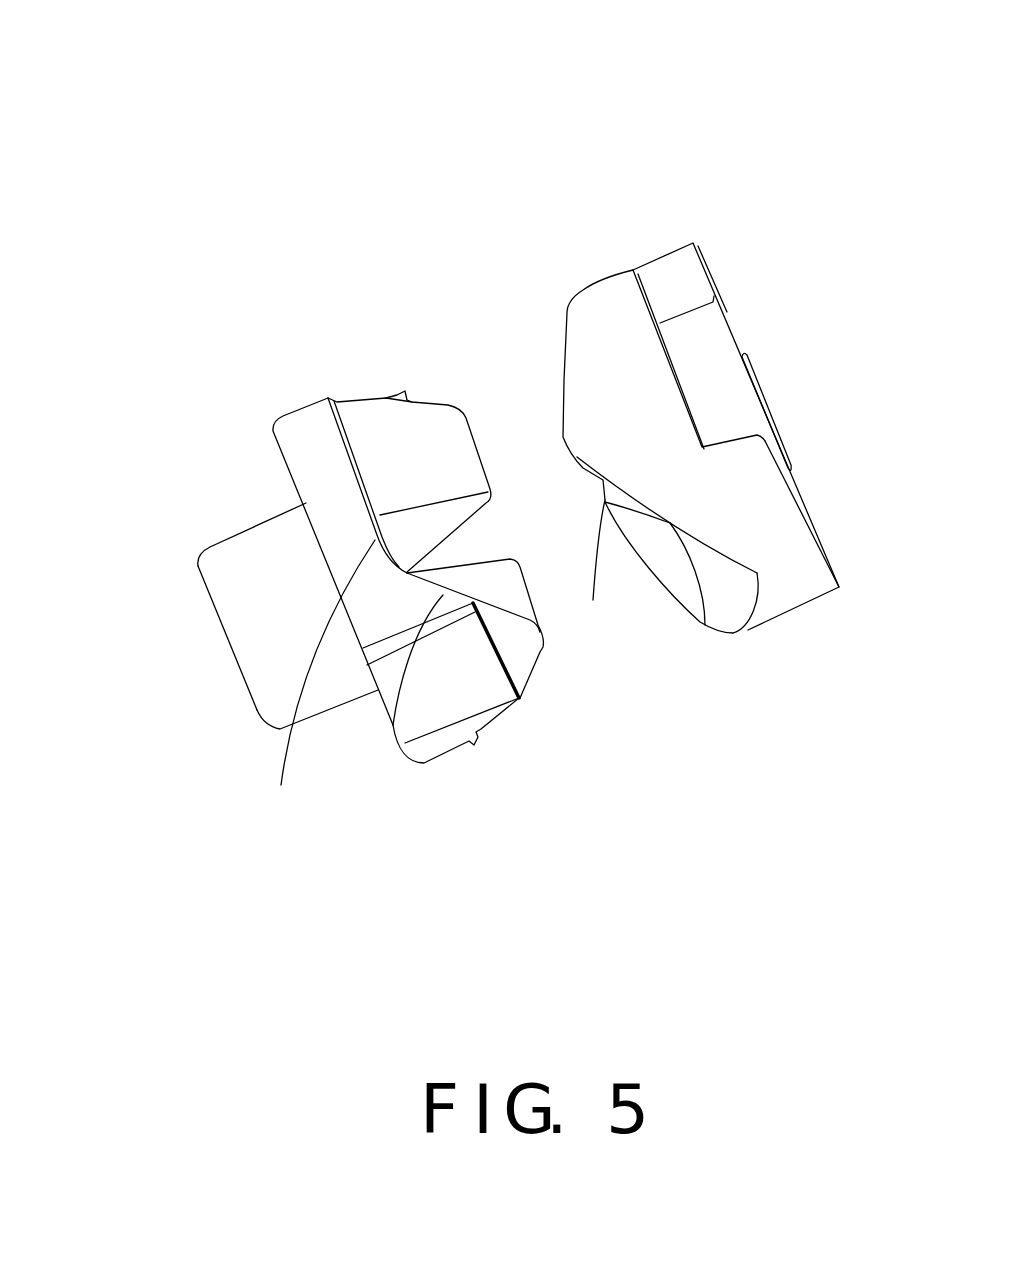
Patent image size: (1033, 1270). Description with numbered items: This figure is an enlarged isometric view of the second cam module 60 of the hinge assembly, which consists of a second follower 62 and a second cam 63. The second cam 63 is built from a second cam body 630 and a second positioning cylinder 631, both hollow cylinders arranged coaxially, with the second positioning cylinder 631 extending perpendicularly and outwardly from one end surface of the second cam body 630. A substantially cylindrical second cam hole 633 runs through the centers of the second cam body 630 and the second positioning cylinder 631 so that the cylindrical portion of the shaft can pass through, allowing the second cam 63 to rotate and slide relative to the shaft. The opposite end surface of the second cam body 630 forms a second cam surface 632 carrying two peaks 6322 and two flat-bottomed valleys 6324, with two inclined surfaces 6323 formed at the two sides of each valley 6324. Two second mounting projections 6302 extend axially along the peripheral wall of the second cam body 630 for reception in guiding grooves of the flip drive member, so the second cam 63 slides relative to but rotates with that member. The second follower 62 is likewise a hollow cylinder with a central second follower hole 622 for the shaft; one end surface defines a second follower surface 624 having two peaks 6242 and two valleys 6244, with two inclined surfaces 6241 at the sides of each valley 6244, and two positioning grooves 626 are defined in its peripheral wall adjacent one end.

The second cam module 60 is at (521, 46).
The second follower 62 is at (672, 195).
The second cam 63 is at (230, 415).
The second cam body 630 is at (308, 420).
The second mounting projection 6302 is at (393, 390).
The second positioning cylinder 631 is at (266, 580).
The second cam hole 633 is at (226, 658).
The second cam surface 632 is at (502, 863).
The peak 6322 is at (522, 705).
The inclined surface 6323 is at (393, 725).
The valley 6324 is at (281, 785).
The second follower surface 624 is at (817, 762).
The inclined surface 6241 is at (705, 625).
The peak 6242 is at (593, 600).
The valley 6244 is at (757, 573).
The positioning groove 626 is at (714, 373).
The second follower hole 622 is at (769, 425).